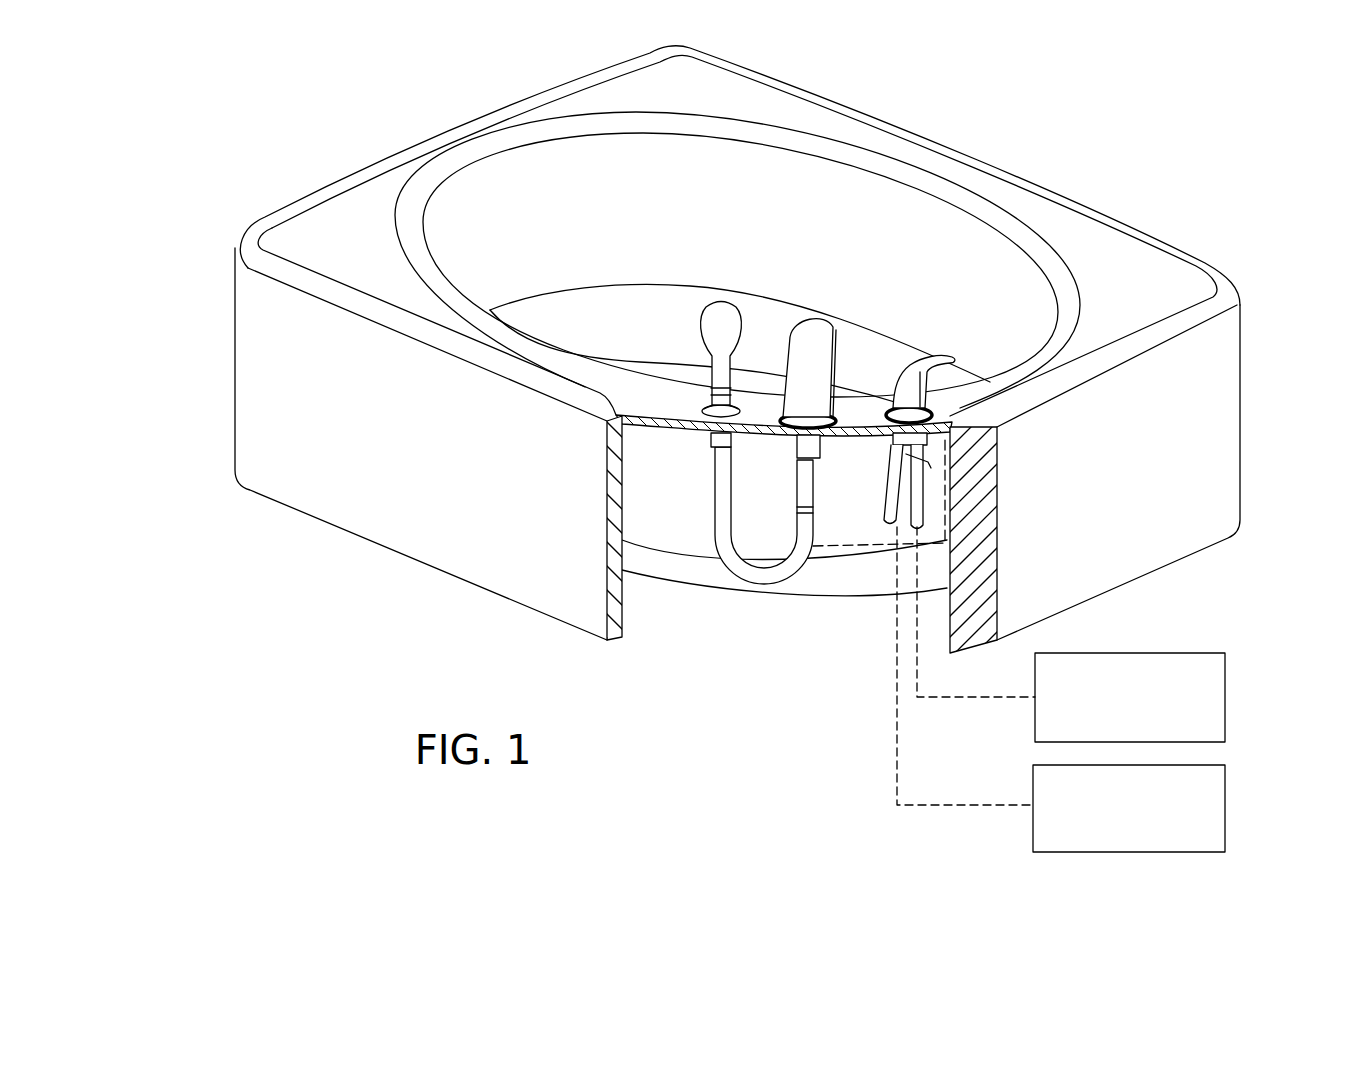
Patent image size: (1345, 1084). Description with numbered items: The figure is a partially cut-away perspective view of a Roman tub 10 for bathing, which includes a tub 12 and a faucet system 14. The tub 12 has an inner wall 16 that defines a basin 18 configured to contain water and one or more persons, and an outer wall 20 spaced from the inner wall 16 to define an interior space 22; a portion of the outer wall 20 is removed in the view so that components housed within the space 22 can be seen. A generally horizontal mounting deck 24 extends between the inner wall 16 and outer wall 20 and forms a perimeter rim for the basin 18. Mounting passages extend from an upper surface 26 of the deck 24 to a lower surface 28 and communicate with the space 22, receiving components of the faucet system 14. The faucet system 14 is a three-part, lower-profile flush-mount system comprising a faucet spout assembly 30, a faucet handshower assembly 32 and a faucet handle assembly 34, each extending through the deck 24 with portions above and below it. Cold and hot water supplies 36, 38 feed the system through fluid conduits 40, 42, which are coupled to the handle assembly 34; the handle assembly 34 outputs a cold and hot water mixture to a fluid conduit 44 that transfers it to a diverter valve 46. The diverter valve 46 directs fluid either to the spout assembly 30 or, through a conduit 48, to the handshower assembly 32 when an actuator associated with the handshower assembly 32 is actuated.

The Roman tub 10 is at (1085, 172).
The tub 12 is at (797, 183).
The faucet system 14 is at (820, 283).
The inner wall 16 is at (670, 163).
The basin 18 is at (648, 370).
The outer wall 20 is at (630, 585).
The interior space 22 is at (650, 667).
The mounting deck 24 is at (1143, 277).
The upper surface 26 is at (645, 397).
The lower surface 28 is at (678, 428).
The faucet spout assembly 30 is at (820, 323).
The faucet handshower assembly 32 is at (723, 303).
The faucet handle assembly 34 is at (919, 337).
The cold water supply 36 is at (1225, 695).
The hot water supply 38 is at (1225, 803).
The fluid conduit 40 is at (985, 697).
The fluid conduit 42 is at (945, 805).
The fluid conduit 44 is at (848, 552).
The diverter valve 46 is at (813, 486).
The conduit 48 is at (778, 587).